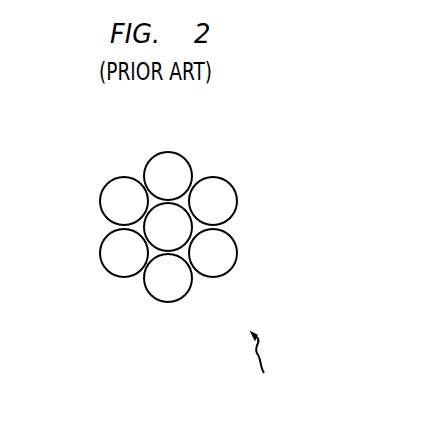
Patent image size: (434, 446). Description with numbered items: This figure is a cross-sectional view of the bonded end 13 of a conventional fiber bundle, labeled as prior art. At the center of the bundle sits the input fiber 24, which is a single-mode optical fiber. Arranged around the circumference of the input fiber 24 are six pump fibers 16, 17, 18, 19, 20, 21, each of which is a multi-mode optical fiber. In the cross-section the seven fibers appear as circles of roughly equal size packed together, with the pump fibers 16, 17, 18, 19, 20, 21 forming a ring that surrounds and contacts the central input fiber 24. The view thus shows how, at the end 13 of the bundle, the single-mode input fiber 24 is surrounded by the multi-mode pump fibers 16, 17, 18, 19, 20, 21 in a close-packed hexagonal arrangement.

The end of the fiber bundle 13 is at (263, 368).
The pump fiber 16 is at (145, 158).
The pump fiber 17 is at (230, 215).
The pump fiber 18 is at (227, 264).
The pump fiber 19 is at (185, 290).
The pump fiber 20 is at (102, 233).
The pump fiber 21 is at (103, 183).
The input fiber 24 is at (181, 236).